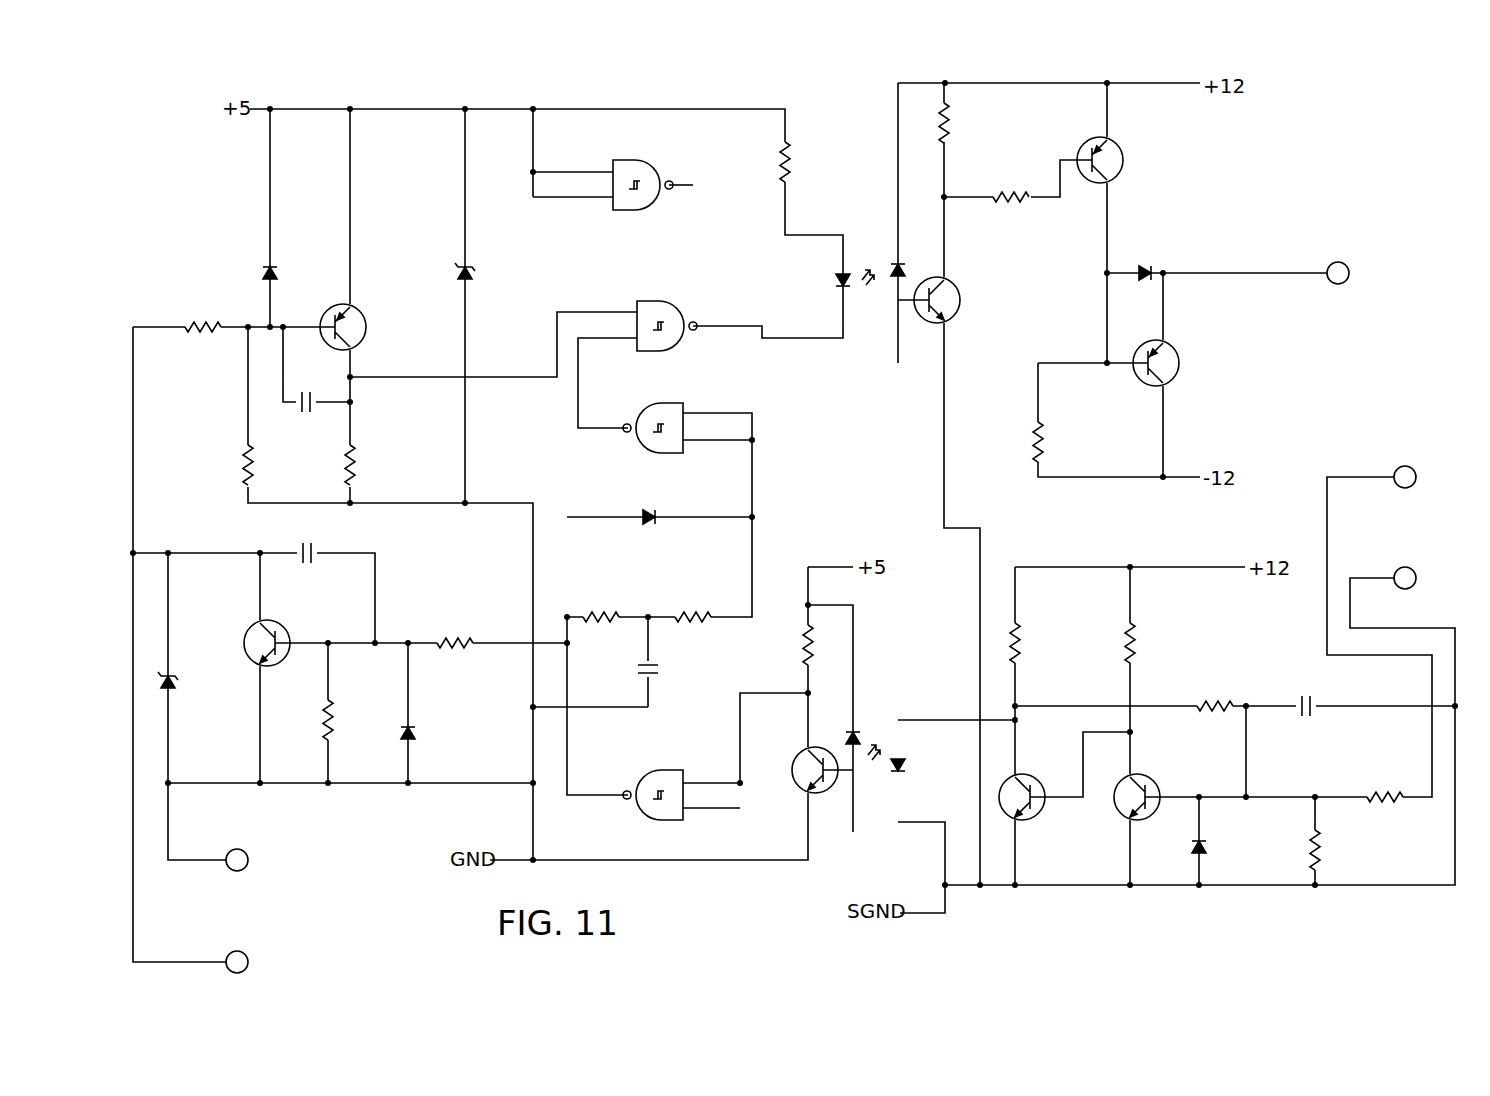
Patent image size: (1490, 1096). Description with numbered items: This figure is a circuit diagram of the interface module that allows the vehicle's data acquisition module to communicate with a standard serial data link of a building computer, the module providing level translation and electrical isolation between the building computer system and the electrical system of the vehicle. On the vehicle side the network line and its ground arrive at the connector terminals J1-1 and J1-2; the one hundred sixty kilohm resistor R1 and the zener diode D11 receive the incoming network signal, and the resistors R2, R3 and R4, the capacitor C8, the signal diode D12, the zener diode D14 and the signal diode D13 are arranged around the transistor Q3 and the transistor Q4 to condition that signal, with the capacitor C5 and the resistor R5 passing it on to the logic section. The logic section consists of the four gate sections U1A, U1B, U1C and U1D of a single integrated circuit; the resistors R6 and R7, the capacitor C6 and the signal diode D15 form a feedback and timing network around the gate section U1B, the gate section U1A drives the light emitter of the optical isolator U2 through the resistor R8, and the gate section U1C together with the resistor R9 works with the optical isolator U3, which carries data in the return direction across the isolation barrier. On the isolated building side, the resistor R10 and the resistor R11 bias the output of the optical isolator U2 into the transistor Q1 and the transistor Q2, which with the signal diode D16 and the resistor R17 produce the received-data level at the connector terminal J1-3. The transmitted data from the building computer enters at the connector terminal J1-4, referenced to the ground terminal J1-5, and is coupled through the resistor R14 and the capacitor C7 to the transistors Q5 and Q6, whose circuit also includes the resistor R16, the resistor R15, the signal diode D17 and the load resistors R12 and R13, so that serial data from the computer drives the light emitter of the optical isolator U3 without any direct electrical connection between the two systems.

The resistor R1 is at (196, 305).
The resistor R2 is at (271, 467).
The resistor R3 is at (373, 467).
The resistor R4 is at (351, 722).
The resistor R5 is at (448, 619).
The resistor R6 is at (595, 595).
The resistor R7 is at (687, 595).
The resistor R8 is at (807, 163).
The resistor R9 is at (832, 645).
The resistor R10 is at (967, 124).
The resistor R11 is at (1005, 175).
The resistor R12 is at (1038, 644).
The resistor R13 is at (1153, 644).
The resistor R14 is at (1206, 683).
The resistor R15 is at (1338, 846).
The resistor R16 is at (1378, 775).
The resistor R17 is at (1062, 440).
The capacitor C5 is at (297, 555).
The capacitor C6 is at (670, 668).
The capacitor C7 is at (1296, 708).
The capacitor C8 is at (297, 402).
The zener diode D11 is at (226, 675).
The signal diode D12 is at (316, 267).
The signal diode D13 is at (454, 727).
The zener diode D14 is at (522, 267).
The signal diode D15 is at (658, 517).
The signal diode D16 is at (1150, 275).
The signal diode D17 is at (1245, 843).
The transistor Q1 is at (1141, 155).
The transistor Q2 is at (1199, 359).
The transistor Q3 is at (384, 322).
The transistor Q4 is at (318, 627).
The transistor Q5 is at (1069, 779).
The transistor Q6 is at (1184, 779).
The gate section of integrated circuit U1 U1A is at (672, 306).
The gate section of integrated circuit U1 U1B is at (649, 407).
The gate section of integrated circuit U1 U1C is at (654, 773).
The gate section of integrated circuit U1 U1D is at (642, 164).
The integrated circuit U2 is at (885, 287).
The integrated circuit U3 is at (864, 772).
The connector J1 pin 1 VNET J1-1 is at (255, 945).
The connector J1 pin 2 VGND J1-2 is at (258, 843).
The connector J1 pin 3 RD J1-3 is at (1342, 259).
The connector J1 pin 4 TD J1-4 is at (1411, 463).
The connector J1 pin 5 GND J1-5 is at (1420, 563).